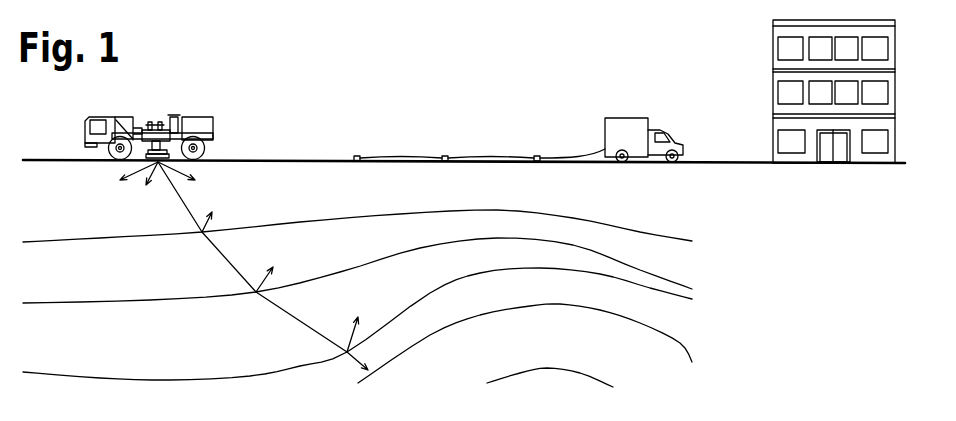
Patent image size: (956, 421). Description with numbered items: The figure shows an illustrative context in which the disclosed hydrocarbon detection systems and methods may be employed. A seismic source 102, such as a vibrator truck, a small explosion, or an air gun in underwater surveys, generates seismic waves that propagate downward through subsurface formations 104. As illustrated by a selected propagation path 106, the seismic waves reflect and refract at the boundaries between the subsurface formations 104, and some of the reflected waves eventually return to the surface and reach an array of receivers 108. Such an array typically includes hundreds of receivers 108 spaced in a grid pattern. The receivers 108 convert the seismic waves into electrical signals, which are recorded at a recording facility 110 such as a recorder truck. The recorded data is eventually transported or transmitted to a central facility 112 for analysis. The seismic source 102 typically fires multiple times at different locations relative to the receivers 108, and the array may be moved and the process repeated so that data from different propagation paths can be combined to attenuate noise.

The seismic source 102 is at (150, 127).
The subsurface formations 104 is at (700, 168).
The selected propagation path 106 is at (177, 194).
The receivers 108 is at (535, 156).
The recording facility 110 is at (605, 130).
The central facility 112 is at (771, 62).